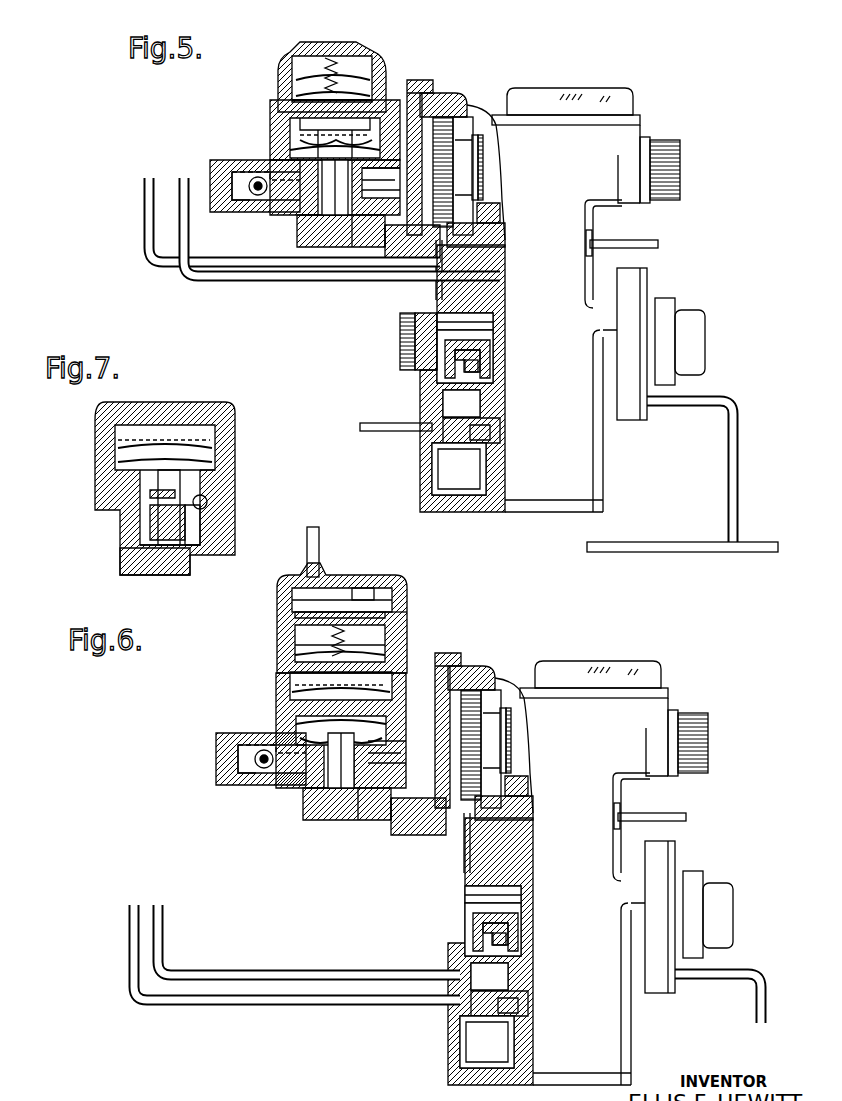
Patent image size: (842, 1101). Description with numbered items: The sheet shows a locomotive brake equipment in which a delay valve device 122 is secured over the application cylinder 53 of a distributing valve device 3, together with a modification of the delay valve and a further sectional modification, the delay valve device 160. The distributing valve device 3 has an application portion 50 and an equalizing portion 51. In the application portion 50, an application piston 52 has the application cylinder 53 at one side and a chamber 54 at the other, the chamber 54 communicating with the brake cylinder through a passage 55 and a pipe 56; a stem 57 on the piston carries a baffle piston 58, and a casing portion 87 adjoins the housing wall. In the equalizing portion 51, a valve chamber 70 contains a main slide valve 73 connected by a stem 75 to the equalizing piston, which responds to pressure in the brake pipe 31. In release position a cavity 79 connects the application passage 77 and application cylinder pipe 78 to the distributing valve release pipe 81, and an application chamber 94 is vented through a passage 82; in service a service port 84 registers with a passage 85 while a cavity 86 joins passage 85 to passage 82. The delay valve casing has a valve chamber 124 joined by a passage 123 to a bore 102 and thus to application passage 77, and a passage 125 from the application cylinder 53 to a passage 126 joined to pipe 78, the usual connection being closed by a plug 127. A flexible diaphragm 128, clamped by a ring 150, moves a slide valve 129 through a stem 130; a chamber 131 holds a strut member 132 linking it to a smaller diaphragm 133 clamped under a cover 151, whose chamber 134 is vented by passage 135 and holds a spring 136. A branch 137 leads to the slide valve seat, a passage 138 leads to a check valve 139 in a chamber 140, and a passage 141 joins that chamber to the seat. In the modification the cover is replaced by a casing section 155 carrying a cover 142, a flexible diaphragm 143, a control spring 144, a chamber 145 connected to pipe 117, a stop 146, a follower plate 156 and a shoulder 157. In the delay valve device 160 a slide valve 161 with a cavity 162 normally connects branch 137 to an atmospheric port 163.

In FIG. 5, the distributing valve device 3 is at (640, 90).
In FIG. 6, the distributing valve device 3 is at (670, 701).
In FIG. 5, the brake pipe 31 is at (606, 545).
In FIG. 6, the brake pipe 31 is at (718, 1000).
In FIG. 5, the application portion 50 is at (587, 102).
In FIG. 6, the application portion 50 is at (594, 701).
In FIG. 5, the equalizing portion 51 is at (596, 442).
In FIG. 6, the equalizing portion 51 is at (602, 997).
In FIG. 5, the application piston 52 is at (462, 137).
In FIG. 6, the application piston 52 is at (482, 717).
In FIG. 5, the application cylinder 53 is at (445, 133).
In FIG. 6, the application cylinder 53 is at (470, 713).
In FIG. 5, the chamber 54 is at (488, 113).
In FIG. 6, the chamber 54 is at (523, 719).
In FIG. 5, the passage 55 is at (496, 220).
In FIG. 6, the passage 55 is at (536, 783).
In FIG. 5, the pipe 56 is at (633, 242).
In FIG. 6, the pipe 56 is at (668, 827).
In FIG. 5, the stem 57 is at (480, 168).
In FIG. 6, the stem 57 is at (533, 740).
In FIG. 5, the baffle piston 58 is at (484, 182).
In FIG. 6, the baffle piston 58 is at (536, 740).
In FIG. 5, the valve chamber 70 is at (498, 276).
In FIG. 6, the valve chamber 70 is at (505, 951).
In FIG. 5, the main slide valve 73 is at (488, 336).
In FIG. 6, the main slide valve 73 is at (514, 920).
In FIG. 5, the stem 75 is at (470, 320).
In FIG. 6, the stem 75 is at (514, 881).
In FIG. 5, the application passage 77 is at (436, 272).
In FIG. 6, the application passage 77 is at (447, 962).
In FIG. 5, the application cylinder pipe 78 is at (150, 268).
In FIG. 6, the application cylinder pipe 78 is at (257, 977).
In FIG. 5, the cavity 79 is at (492, 362).
In FIG. 6, the cavity 79 is at (523, 940).
In FIG. 5, the distributing valve release pipe 81 is at (412, 426).
In FIG. 6, the distributing valve release pipe 81 is at (310, 1004).
In FIG. 5, the passage 82 is at (496, 430).
In FIG. 6, the passage 82 is at (517, 1009).
In FIG. 5, the service port 84 is at (494, 346).
In FIG. 6, the service port 84 is at (518, 930).
In FIG. 5, the passage 85 is at (488, 407).
In FIG. 6, the passage 85 is at (517, 984).
In FIG. 5, the cavity 86 is at (492, 374).
In FIG. 6, the cavity 86 is at (527, 957).
In FIG. 5, the flange 87 is at (502, 234).
In FIG. 6, the flange 87 is at (521, 808).
In FIG. 5, the application chamber 94 is at (446, 480).
In FIG. 6, the application chamber 94 is at (444, 1042).
In FIG. 5, the bore 102 is at (440, 250).
In FIG. 6, the bore 102 is at (425, 839).
In FIG. 6, the pipe 117 is at (319, 545).
In FIG. 5, the delay valve device 122 is at (396, 115).
In FIG. 6, the delay valve device 122 is at (436, 717).
In FIG. 5, the passage 123 is at (396, 250).
In FIG. 7, the passage 123 is at (205, 548).
In FIG. 6, the passage 123 is at (392, 839).
In FIG. 5, the valve chamber 124 is at (300, 236).
In FIG. 7, the valve chamber 124 is at (140, 552).
In FIG. 6, the valve chamber 124 is at (323, 834).
In FIG. 5, the passage 125 is at (470, 150).
In FIG. 7, the passage 125 is at (215, 475).
In FIG. 6, the passage 125 is at (527, 735).
In FIG. 5, the passage 126 is at (392, 187).
In FIG. 7, the passage 126 is at (208, 500).
In FIG. 6, the passage 126 is at (410, 758).
In FIG. 5, the plug 127 is at (418, 402).
In FIG. 5, the flexible diaphragm 128 is at (278, 150).
In FIG. 7, the flexible diaphragm 128 is at (120, 490).
In FIG. 6, the flexible diaphragm 128 is at (282, 705).
In FIG. 5, the slide valve 129 is at (306, 242).
In FIG. 6, the slide valve 129 is at (289, 807).
In FIG. 5, the stem 130 is at (345, 192).
In FIG. 6, the stem 130 is at (341, 760).
In FIG. 5, the chamber 131 is at (300, 145).
In FIG. 7, the chamber 131 is at (130, 444).
In FIG. 6, the chamber 131 is at (285, 672).
In FIG. 5, the strut member 132 is at (272, 110).
In FIG. 6, the strut member 132 is at (300, 700).
In FIG. 5, the diaphragm 133 is at (382, 98).
In FIG. 7, the diaphragm 133 is at (215, 440).
In FIG. 6, the diaphragm 133 is at (295, 674).
In FIG. 5, the chamber 134 is at (348, 72).
In FIG. 5, the passage 135 is at (355, 90).
In FIG. 5, the spring 136 is at (324, 60).
In FIG. 6, the spring 136 is at (280, 730).
In FIG. 5, the branch 137 is at (346, 240).
In FIG. 7, the branch 137 is at (200, 520).
In FIG. 6, the branch 137 is at (341, 827).
In FIG. 5, the passage 138 is at (266, 214).
In FIG. 6, the passage 138 is at (252, 782).
In FIG. 5, the check valve 139 is at (248, 190).
In FIG. 6, the check valve 139 is at (231, 785).
In FIG. 5, the chamber 140 is at (212, 168).
In FIG. 6, the chamber 140 is at (237, 759).
In FIG. 5, the passage 141 is at (392, 163).
In FIG. 6, the passage 141 is at (410, 738).
In FIG. 6, the cover 142 is at (395, 613).
In FIG. 6, the flexible diaphragm 143 is at (300, 605).
In FIG. 6, the control spring 144 is at (300, 640).
In FIG. 6, the chamber 145 is at (350, 600).
In FIG. 6, the stop 146 is at (342, 615).
In FIG. 5, the ring 150 is at (292, 100).
In FIG. 5, the cover 151 is at (278, 70).
In FIG. 6, the casing section 155 is at (351, 646).
In FIG. 6, the follower plate 156 is at (406, 590).
In FIG. 6, the shoulder 157 is at (444, 613).
In FIG. 7, the delay valve device 160 is at (110, 430).
In FIG. 7, the slide valve 161 is at (170, 505).
In FIG. 7, the cavity 162 is at (160, 525).
In FIG. 7, the atmospheric port 163 is at (152, 492).